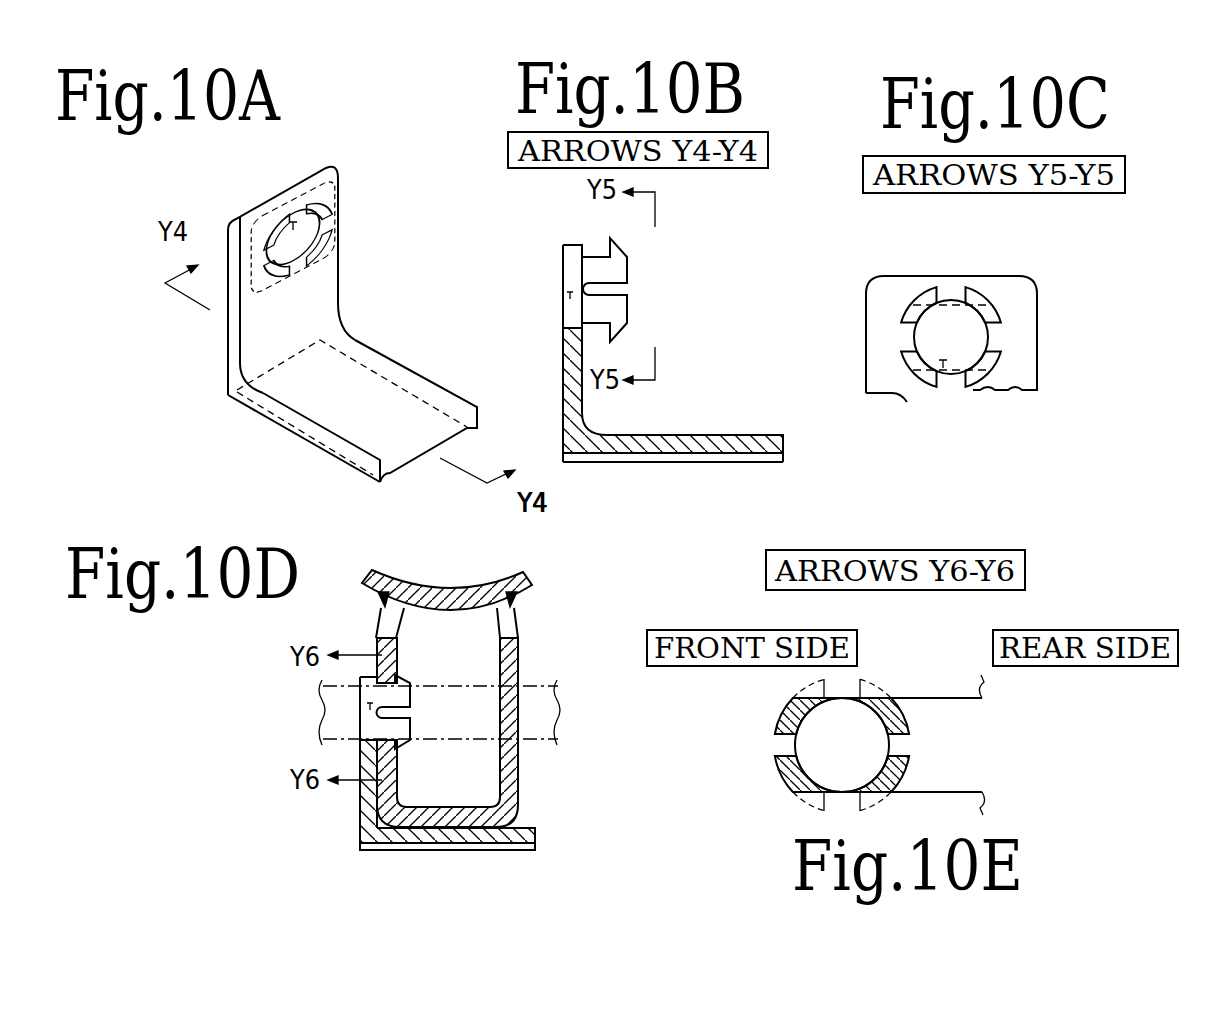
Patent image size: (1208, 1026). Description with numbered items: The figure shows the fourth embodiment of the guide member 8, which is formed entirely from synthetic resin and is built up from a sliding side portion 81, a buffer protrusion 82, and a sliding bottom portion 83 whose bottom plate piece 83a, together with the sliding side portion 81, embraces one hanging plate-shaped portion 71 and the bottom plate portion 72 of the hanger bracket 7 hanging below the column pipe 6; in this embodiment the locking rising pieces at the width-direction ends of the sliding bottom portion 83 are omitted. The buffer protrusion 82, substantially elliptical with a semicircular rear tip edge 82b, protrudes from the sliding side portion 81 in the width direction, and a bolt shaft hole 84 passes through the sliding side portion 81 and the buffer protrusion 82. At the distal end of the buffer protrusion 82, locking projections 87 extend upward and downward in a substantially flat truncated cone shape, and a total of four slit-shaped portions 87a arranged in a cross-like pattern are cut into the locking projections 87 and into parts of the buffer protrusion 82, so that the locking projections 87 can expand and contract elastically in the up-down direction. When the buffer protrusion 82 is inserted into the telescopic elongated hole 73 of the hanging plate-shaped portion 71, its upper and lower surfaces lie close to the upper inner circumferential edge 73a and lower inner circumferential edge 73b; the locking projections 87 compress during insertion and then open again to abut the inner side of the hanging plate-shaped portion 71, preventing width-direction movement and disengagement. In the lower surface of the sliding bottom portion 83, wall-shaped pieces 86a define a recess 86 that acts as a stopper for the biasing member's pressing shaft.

In FIG. 10D, the column pipe 6 is at (451, 579).
In FIG. 10D, the hanger bracket 7 is at (536, 772).
In FIG. 10E, the hanger bracket 7 is at (994, 803).
In FIG. 10A, the guide member 8 is at (420, 357).
In FIG. 10B, the guide member 8 is at (634, 476).
In FIG. 10D, the guide member 8 is at (349, 815).
In FIG. 10D, the hanging plate-shaped portion 71 is at (397, 645).
In FIG. 10D, the bottom plate portion 72 is at (437, 805).
In FIG. 10D, the telescopic elongated hole 73 is at (510, 707).
In FIG. 10E, the telescopic elongated hole 73 is at (978, 747).
In FIG. 10D, the upper inner circumferential edge 73a is at (357, 683).
In FIG. 10E, the upper inner circumferential edge 73a is at (974, 700).
In FIG. 10D, the lower inner circumferential edge 73b is at (360, 730).
In FIG. 10E, the lower inner circumferential edge 73b is at (970, 790).
In FIG. 10A, the sliding side portion 81 is at (338, 257).
In FIG. 10B, the sliding side portion 81 is at (568, 365).
In FIG. 10C, the sliding side portion 81 is at (866, 313).
In FIG. 10A, the buffer protrusion 82 is at (267, 200).
In FIG. 10B, the buffer protrusion 82 is at (602, 252).
In FIG. 10C, the rear tip edge 82b is at (1030, 367).
In FIG. 10A, the sliding bottom portion 83 is at (387, 350).
In FIG. 10B, the sliding bottom portion 83 is at (717, 435).
In FIG. 10A, the bottom plate piece 83a is at (313, 387).
In FIG. 10B, the bottom plate piece 83a is at (747, 435).
In FIG. 10D, the bottom plate piece 83a is at (517, 828).
In FIG. 10A, the bolt shaft hole 84 is at (293, 222).
In FIG. 10B, the bolt shaft hole 84 is at (570, 295).
In FIG. 10C, the bolt shaft hole 84 is at (946, 372).
In FIG. 10D, the bolt shaft hole 84 is at (368, 704).
In FIG. 10A, the recess 86 is at (413, 455).
In FIG. 10B, the recess 86 is at (668, 463).
In FIG. 10A, the wall-shaped piece 86a is at (473, 425).
In FIG. 10B, the wall-shaped piece 86a is at (728, 465).
In FIG. 10A, the locking projection 87 is at (332, 218).
In FIG. 10B, the locking projection 87 is at (617, 250).
In FIG. 10C, the locking projection 87 is at (932, 292).
In FIG. 10D, the locking projection 87 is at (400, 676).
In FIG. 10E, the locking projection 87 is at (778, 716).
In FIG. 10A, the slit-shaped portion 87a is at (303, 263).
In FIG. 10B, the slit-shaped portion 87a is at (597, 291).
In FIG. 10C, the slit-shaped portion 87a is at (948, 293).
In FIG. 10D, the slit-shaped portion 87a is at (398, 712).
In FIG. 10E, the slit-shaped portion 87a is at (780, 745).